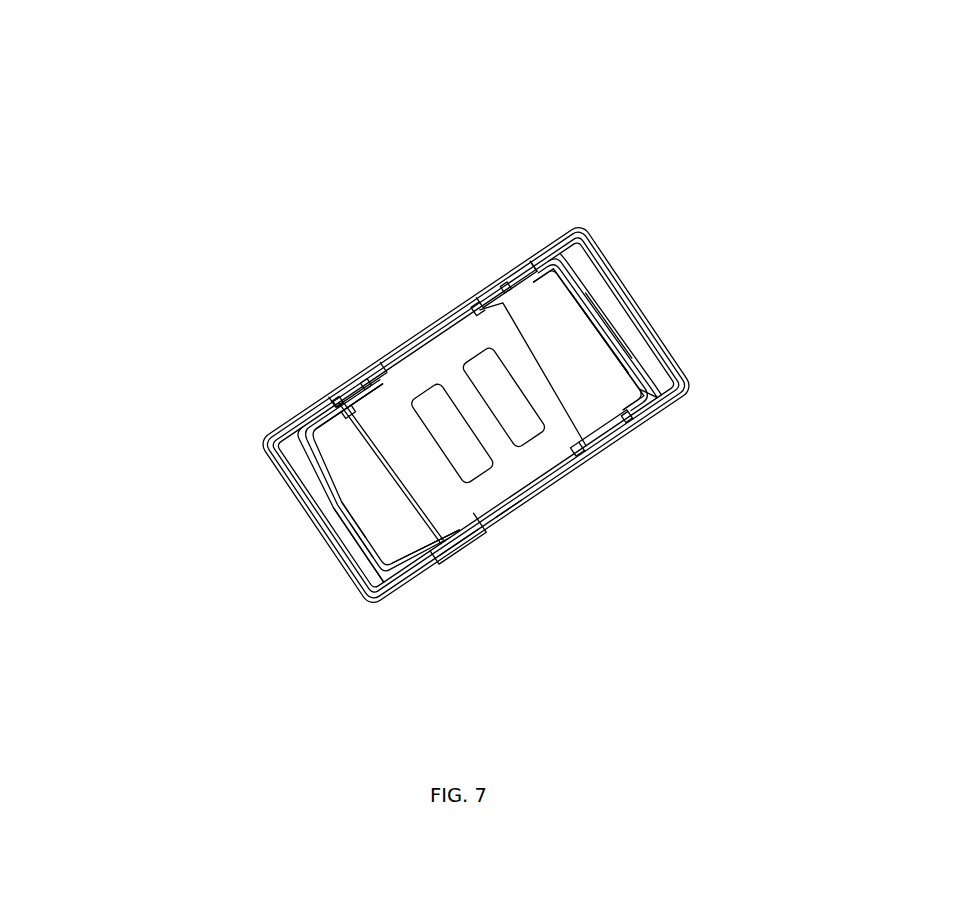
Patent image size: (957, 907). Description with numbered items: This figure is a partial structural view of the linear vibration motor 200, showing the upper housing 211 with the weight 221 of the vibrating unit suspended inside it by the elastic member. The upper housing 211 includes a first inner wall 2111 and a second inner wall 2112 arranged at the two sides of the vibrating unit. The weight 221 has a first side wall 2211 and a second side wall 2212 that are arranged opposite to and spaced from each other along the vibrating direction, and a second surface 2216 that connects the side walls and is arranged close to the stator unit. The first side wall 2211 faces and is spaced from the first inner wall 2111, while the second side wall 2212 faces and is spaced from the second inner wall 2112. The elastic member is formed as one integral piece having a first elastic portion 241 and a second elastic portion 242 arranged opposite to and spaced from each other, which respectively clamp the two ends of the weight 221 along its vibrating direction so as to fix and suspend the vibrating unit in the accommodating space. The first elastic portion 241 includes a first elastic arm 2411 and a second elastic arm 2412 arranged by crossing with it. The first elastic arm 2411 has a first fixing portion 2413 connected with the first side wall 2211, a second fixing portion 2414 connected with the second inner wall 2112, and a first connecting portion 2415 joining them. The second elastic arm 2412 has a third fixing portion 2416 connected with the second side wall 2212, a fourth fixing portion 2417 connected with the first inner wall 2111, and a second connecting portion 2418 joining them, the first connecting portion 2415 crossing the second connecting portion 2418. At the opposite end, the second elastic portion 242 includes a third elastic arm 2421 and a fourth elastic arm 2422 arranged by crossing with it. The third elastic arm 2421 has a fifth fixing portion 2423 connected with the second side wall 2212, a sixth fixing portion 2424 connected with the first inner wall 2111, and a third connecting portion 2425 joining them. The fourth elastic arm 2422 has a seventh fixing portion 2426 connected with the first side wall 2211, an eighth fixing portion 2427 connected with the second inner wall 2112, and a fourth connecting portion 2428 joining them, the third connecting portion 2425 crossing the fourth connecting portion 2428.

The linear vibration motor 200 is at (509, 39).
The upper housing 211 is at (426, 312).
The weight 221 is at (549, 490).
The first inner wall 2111 is at (407, 382).
The second inner wall 2112 is at (521, 504).
The first side wall 2211 is at (503, 286).
The second side wall 2212 is at (478, 527).
The second surface 2216 is at (373, 382).
The first elastic portion 241 is at (814, 488).
The first elastic arm 2411 is at (748, 445).
The second elastic arm 2412 is at (748, 270).
The first fixing portion 2413 is at (612, 474).
The second fixing portion 2414 is at (632, 428).
The first connecting portion 2415 is at (658, 400).
The third fixing portion 2416 is at (622, 366).
The fourth fixing portion 2417 is at (545, 262).
The second connecting portion 2418 is at (600, 306).
The second elastic portion 242 is at (112, 370).
The third elastic arm 2421 is at (183, 300).
The fourth elastic arm 2422 is at (182, 572).
The fifth fixing portion 2423 is at (346, 394).
The sixth fixing portion 2424 is at (340, 408).
The third connecting portion 2425 is at (323, 490).
The seventh fixing portion 2426 is at (342, 503).
The eighth fixing portion 2427 is at (395, 606).
The fourth connecting portion 2428 is at (368, 533).